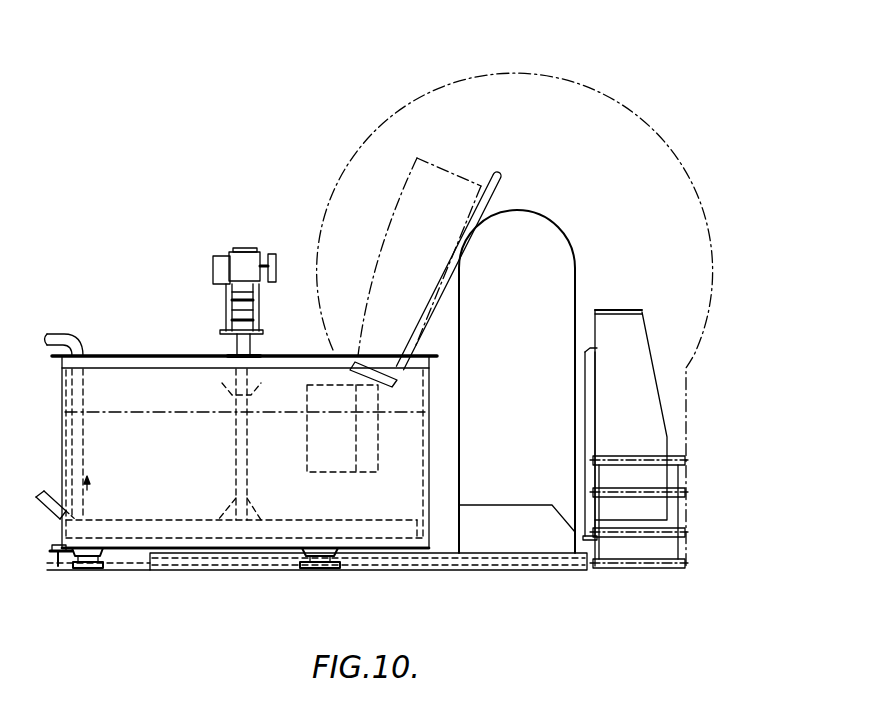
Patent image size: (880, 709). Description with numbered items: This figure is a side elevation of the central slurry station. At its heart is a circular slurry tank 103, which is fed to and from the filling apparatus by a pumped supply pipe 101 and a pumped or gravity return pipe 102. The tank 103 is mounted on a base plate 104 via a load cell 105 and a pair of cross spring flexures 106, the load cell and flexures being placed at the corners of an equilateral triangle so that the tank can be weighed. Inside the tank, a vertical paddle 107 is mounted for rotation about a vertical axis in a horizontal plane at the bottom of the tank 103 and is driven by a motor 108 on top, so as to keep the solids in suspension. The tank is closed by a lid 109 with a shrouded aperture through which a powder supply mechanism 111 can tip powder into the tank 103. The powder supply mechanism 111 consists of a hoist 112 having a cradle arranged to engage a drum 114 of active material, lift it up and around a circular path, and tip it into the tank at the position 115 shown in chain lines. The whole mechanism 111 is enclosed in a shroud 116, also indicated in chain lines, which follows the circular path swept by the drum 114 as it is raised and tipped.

The pumped supply pipe 101 is at (66, 338).
The return pipe 102 is at (53, 512).
The slurry tank 103 is at (431, 454).
The base plate 104 is at (150, 570).
The load cell 105 is at (87, 570).
The cross spring flexures 106 is at (320, 566).
The vertical paddle 107 is at (393, 532).
The motor 108 is at (250, 250).
The lid 109 is at (284, 357).
The powder supply mechanism 111 is at (632, 148).
The hoist 112 is at (590, 366).
The drum 114 is at (673, 452).
The tipping position 115 is at (393, 199).
The shroud 116 is at (623, 91).